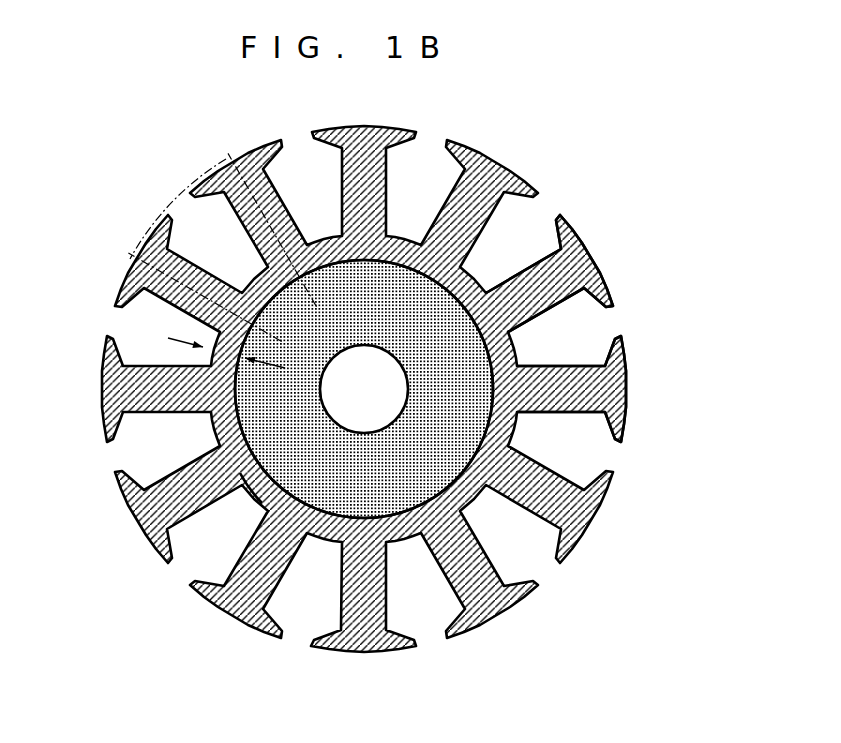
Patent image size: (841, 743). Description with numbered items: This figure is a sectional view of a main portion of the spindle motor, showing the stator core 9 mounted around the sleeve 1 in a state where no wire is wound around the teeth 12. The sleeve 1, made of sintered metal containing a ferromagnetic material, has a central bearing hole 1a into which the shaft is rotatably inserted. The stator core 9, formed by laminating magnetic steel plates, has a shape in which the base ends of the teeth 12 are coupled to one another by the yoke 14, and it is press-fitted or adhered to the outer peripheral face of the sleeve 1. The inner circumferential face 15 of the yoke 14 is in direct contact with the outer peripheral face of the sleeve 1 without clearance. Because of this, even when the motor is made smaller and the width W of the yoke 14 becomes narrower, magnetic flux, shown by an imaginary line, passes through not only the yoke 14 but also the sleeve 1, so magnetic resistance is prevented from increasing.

The sleeve 1 is at (430, 462).
The bearing hole 1a is at (334, 416).
The stator core 9 is at (600, 259).
The teeth 12 is at (553, 382).
The yoke 14 is at (503, 425).
The inner circumferential face 15 is at (252, 453).
The width of the yoke W is at (198, 412).